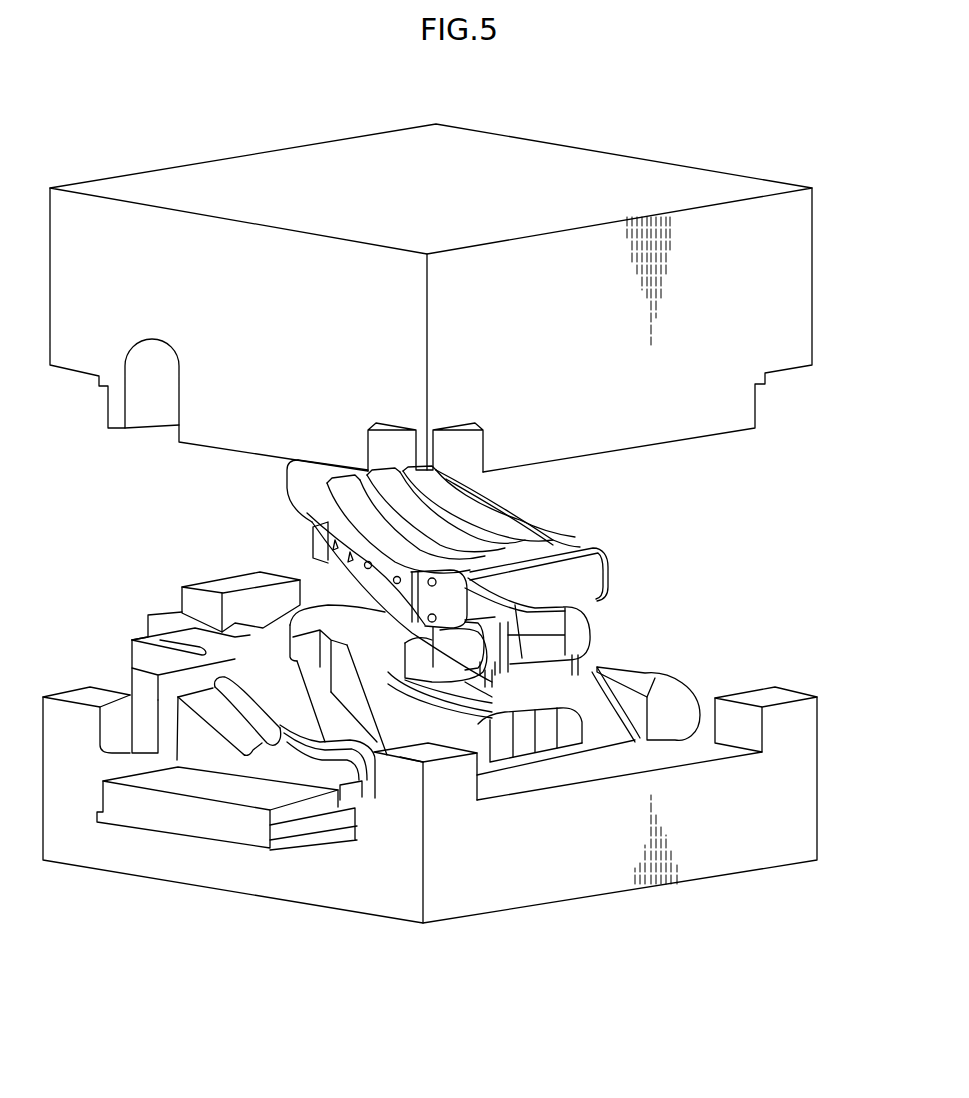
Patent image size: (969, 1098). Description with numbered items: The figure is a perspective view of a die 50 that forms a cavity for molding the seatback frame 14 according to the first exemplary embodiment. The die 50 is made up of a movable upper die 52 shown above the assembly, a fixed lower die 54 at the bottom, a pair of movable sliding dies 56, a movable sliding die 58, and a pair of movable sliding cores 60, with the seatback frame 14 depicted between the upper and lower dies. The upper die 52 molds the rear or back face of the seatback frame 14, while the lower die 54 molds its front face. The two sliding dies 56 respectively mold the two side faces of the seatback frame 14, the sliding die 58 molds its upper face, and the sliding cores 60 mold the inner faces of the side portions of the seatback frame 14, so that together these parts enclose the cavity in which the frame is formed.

The die 50 is at (757, 130).
The upper die 52 is at (815, 258).
The lower die 54 is at (818, 757).
The sliding dies 56 is at (675, 687).
The sliding die 58 is at (182, 598).
The sliding cores 60 is at (590, 622).
The seatback frame 14 is at (510, 517).